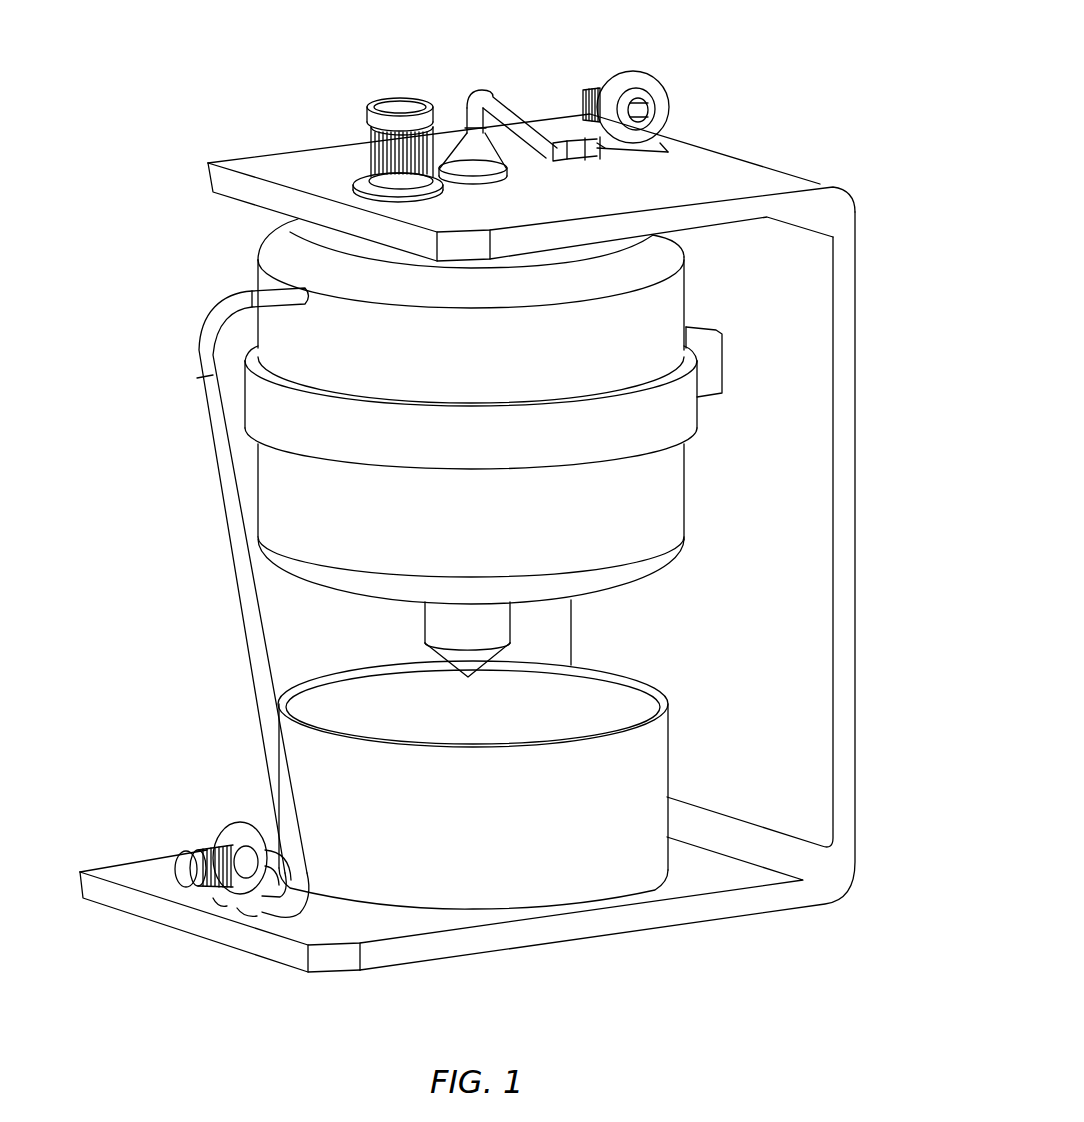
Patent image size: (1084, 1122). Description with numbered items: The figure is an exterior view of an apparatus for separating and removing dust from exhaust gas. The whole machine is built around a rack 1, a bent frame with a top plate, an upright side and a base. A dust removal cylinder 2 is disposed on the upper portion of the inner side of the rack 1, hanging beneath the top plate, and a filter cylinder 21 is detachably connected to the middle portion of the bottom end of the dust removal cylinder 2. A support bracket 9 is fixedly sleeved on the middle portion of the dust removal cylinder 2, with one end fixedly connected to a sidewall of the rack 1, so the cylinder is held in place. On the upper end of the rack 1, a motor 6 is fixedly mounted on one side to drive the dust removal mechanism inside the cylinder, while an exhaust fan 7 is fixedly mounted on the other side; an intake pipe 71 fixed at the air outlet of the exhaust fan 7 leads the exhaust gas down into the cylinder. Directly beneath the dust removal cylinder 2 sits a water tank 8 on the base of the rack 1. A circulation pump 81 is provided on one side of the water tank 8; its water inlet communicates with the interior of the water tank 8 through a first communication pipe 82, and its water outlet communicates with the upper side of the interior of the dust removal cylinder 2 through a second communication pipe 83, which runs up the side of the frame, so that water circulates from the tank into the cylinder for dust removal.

The rack 1 is at (757, 680).
The dust removal cylinder 2 is at (637, 513).
The filter cylinder 21 is at (480, 623).
The motor 6 is at (400, 143).
The exhaust fan 7 is at (653, 97).
The intake pipe 71 is at (530, 127).
The water tank 8 is at (453, 847).
The circulation pump 81 is at (193, 888).
The first communication pipe 82 is at (267, 903).
The second communication pipe 83 is at (250, 606).
The support bracket 9 is at (357, 430).